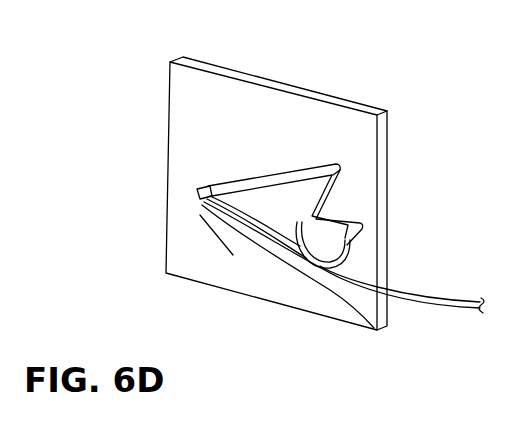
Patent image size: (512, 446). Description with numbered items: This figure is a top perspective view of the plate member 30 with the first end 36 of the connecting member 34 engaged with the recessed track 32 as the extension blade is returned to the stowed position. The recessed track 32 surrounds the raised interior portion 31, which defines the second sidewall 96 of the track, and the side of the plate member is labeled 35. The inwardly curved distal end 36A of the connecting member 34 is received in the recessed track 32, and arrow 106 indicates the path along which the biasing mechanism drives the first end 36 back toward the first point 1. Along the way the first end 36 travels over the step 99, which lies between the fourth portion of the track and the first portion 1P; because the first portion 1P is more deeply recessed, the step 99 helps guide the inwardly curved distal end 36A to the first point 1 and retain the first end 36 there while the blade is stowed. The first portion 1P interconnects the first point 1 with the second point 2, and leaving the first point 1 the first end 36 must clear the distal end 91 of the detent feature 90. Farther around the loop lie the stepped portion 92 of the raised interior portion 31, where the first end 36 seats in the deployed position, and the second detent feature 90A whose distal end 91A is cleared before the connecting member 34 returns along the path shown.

The plate member 30 is at (288, 70).
The recessed track 32 is at (221, 158).
The detent feature 90 is at (300, 202).
The first portion 1P is at (297, 185).
The distal end 91 is at (316, 178).
The second point 2 is at (335, 170).
The plate side edge 35 is at (362, 138).
The second sidewall 96 is at (360, 238).
The connecting member 34 is at (433, 303).
The step 99 is at (190, 211).
The arrow 106 is at (217, 231).
The raised interior portion 31 is at (283, 218).
The stepped portion 92 is at (303, 212).
The second detent feature 90A is at (323, 247).
The distal end 91A is at (337, 237).
The first end 36 is at (195, 193).
The inwardly curved distal end 36A is at (197, 192).
The first point 1 is at (218, 196).